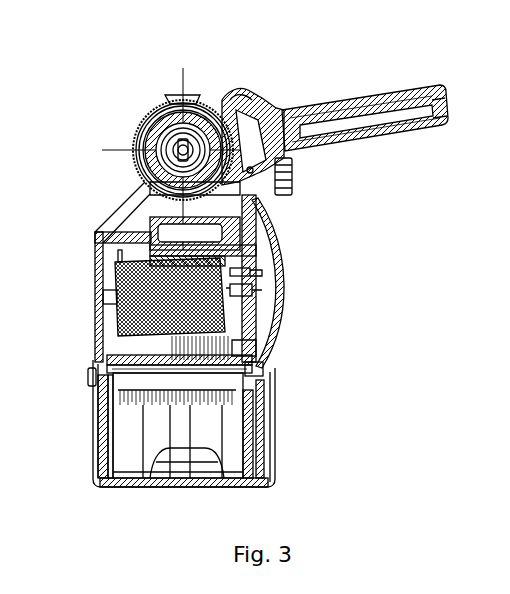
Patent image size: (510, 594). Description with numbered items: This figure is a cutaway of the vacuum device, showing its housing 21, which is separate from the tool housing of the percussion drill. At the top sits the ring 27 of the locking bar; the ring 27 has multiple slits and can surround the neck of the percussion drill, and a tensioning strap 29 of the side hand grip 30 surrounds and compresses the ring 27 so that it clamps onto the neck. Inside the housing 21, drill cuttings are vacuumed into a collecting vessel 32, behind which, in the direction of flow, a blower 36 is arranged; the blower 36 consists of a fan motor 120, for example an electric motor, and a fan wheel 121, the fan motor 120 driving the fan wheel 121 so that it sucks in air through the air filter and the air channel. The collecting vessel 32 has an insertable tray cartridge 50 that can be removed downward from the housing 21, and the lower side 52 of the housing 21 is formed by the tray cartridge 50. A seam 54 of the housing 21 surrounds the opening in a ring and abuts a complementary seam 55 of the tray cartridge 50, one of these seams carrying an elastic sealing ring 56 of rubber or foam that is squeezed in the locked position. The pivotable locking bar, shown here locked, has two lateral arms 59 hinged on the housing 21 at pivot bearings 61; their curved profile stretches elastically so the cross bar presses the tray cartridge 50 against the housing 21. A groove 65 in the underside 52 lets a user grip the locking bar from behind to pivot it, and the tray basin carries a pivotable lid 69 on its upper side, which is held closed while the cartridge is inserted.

The housing 21 is at (95, 258).
The ring 27 is at (140, 112).
The tensioning strap 29 is at (228, 97).
The side hand grip 30 is at (380, 118).
The collecting vessel 32 is at (178, 428).
The blower 36 is at (310, 270).
The tray cartridge 50 is at (100, 430).
The lower side 52 is at (138, 488).
The seam 54 is at (100, 360).
The seam 55 is at (107, 373).
The sealing ring 56 is at (280, 363).
The lateral arms 59 is at (92, 460).
The pivot bearings 61 is at (90, 380).
The groove 65 is at (188, 472).
The pivotable lid 69 is at (242, 350).
The fan motor 120 is at (270, 272).
The fan wheel 121 is at (265, 290).